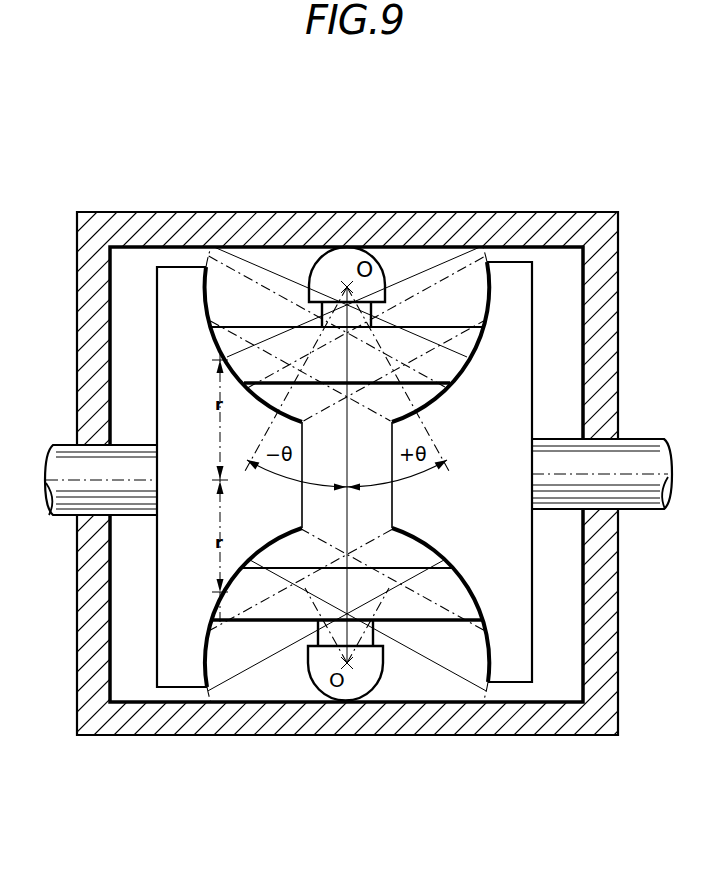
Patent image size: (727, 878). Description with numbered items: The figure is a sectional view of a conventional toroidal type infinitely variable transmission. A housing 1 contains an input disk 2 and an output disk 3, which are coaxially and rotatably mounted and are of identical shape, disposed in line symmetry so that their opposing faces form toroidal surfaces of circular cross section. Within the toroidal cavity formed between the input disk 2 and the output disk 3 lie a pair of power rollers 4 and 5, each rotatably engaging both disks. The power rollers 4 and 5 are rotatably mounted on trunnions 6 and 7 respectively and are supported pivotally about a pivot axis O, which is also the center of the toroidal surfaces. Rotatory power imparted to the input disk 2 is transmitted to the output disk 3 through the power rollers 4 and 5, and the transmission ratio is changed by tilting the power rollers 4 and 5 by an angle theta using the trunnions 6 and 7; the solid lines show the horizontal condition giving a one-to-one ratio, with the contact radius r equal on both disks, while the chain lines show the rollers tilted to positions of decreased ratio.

The housing 1 is at (556, 222).
The input disk 2 is at (170, 352).
The output disk 3 is at (517, 404).
The power roller 4 is at (437, 345).
The power roller 5 is at (258, 594).
The trunnion 6 is at (331, 270).
The trunnion 7 is at (365, 681).